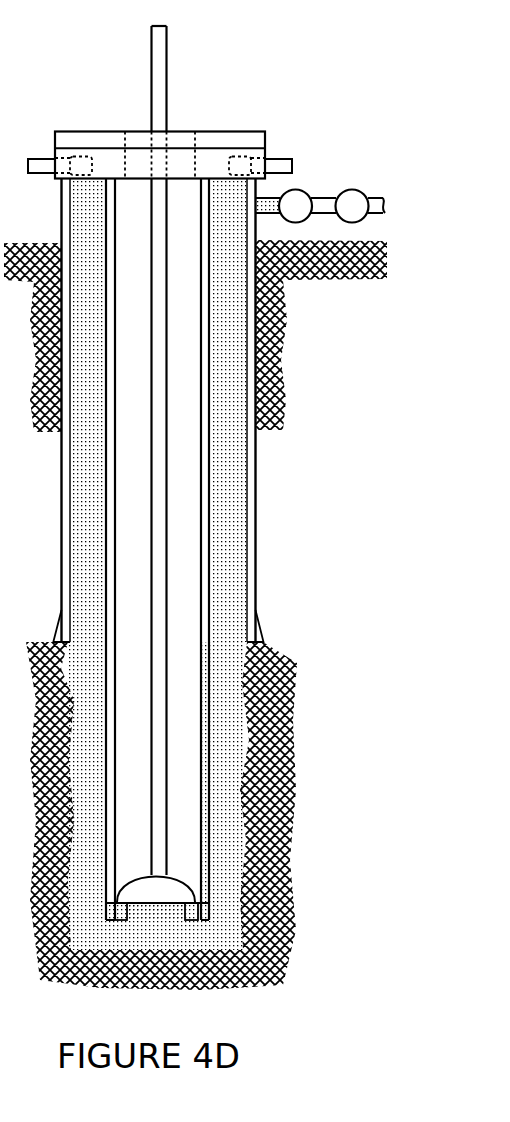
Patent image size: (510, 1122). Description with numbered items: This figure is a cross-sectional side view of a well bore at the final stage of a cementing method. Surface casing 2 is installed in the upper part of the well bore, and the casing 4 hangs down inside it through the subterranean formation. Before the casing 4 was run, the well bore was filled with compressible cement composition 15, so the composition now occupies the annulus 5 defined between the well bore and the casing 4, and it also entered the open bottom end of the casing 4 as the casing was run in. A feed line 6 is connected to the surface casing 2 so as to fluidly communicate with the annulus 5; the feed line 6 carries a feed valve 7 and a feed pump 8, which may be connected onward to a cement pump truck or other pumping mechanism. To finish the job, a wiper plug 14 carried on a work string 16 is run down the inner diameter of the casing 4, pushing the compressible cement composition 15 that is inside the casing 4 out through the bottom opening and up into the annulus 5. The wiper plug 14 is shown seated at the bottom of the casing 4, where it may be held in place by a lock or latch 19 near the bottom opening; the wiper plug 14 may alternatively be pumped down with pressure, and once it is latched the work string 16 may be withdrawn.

The surface casing 2 is at (250, 555).
The casing 4 is at (205, 770).
The annulus 5 is at (230, 400).
The feed line 6 is at (327, 202).
The feed valve 7 is at (297, 197).
The feed pump 8 is at (353, 200).
The wiper plug 14 is at (177, 890).
The compressible cement composition 15 is at (235, 290).
The work string 16 is at (162, 615).
The lock or latch 19 is at (193, 910).